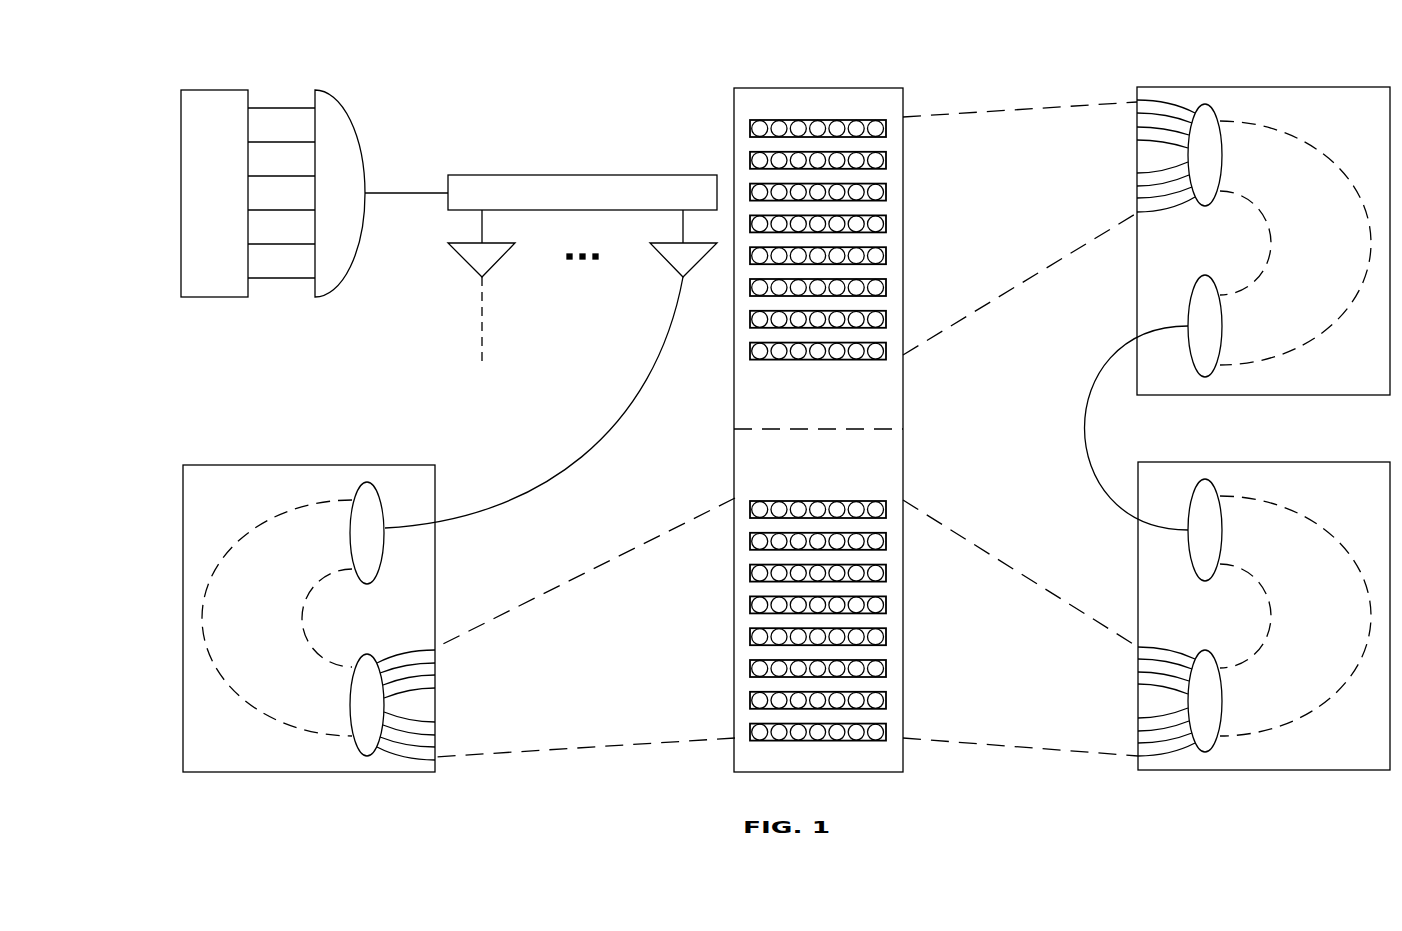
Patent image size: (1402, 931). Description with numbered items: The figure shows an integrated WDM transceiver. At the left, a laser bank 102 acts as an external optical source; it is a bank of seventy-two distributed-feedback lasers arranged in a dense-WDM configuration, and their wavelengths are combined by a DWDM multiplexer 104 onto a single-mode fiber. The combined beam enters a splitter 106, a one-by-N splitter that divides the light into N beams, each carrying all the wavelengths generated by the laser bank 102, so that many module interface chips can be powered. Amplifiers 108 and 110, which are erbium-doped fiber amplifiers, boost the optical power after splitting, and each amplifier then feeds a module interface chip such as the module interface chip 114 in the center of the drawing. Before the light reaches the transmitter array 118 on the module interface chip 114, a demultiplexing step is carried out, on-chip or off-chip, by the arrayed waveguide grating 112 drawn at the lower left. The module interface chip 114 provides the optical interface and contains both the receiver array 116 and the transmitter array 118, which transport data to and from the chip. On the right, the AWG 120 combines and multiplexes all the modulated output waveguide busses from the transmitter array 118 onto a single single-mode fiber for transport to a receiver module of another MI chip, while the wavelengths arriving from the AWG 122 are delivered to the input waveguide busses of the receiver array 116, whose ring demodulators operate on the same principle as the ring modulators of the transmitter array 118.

The laser bank 102 is at (181, 90).
The DWDM multiplexer 104 is at (316, 90).
The splitter 106 is at (582, 209).
The amplifier 108 is at (465, 262).
The amplifier 110 is at (663, 258).
The arrayed waveguide grating 112 is at (184, 465).
The module interface chip 114 is at (735, 88).
The receiver array 116 is at (818, 268).
The transmitter array 118 is at (818, 592).
The AWG 120 is at (1139, 462).
The AWG 122 is at (1138, 87).